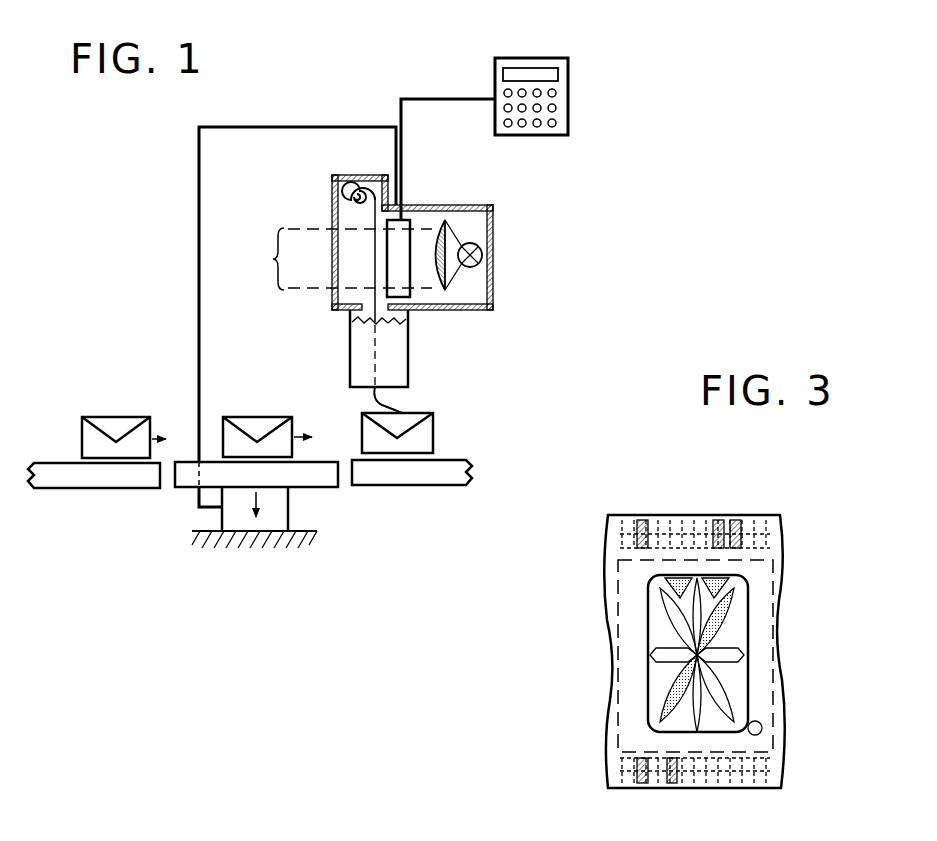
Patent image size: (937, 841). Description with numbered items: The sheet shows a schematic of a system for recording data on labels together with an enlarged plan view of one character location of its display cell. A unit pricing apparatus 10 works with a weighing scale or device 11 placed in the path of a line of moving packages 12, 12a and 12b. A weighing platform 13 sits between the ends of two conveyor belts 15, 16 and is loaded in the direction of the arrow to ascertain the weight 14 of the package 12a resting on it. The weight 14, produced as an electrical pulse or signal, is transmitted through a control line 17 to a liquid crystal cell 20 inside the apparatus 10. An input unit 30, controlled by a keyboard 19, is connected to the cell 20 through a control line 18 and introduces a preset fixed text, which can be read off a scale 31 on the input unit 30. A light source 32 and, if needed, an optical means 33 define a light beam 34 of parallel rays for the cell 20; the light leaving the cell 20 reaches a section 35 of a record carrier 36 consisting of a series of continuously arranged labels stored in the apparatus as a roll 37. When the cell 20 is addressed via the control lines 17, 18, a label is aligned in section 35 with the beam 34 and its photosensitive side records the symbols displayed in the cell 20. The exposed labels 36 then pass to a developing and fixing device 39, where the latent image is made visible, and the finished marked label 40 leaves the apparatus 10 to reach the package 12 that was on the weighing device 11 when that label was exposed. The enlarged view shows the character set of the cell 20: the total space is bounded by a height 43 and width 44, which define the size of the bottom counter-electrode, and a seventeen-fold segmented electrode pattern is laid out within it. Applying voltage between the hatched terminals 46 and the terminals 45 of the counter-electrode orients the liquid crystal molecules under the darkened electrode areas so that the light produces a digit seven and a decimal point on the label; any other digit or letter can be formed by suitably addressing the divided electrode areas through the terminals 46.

In FIG. 1, the unit pricing apparatus 10 is at (500, 197).
In FIG. 1, the weighing scale or device 11 is at (296, 499).
In FIG. 1, the package 12 is at (372, 412).
In FIG. 1, the package 12a is at (265, 417).
In FIG. 1, the package 12b is at (116, 420).
In FIG. 1, the weighing platform 13 is at (330, 476).
In FIG. 1, the weight 14 is at (230, 515).
In FIG. 1, the conveyor belt 15 is at (82, 478).
In FIG. 1, the conveyor belt 16 is at (414, 477).
In FIG. 1, the control line 17 is at (285, 127).
In FIG. 1, the control line 18 is at (433, 99).
In FIG. 1, the keyboard 19 is at (556, 108).
In FIG. 1, the liquid crystal cell 20 is at (414, 226).
In FIG. 3, the liquid crystal cell 20 is at (786, 504).
In FIG. 1, the input unit 30 is at (576, 64).
In FIG. 1, the scale 31 is at (535, 72).
In FIG. 1, the light source 32 is at (483, 257).
In FIG. 1, the optical means 33 is at (444, 285).
In FIG. 1, the light beam 34 is at (429, 228).
In FIG. 1, the section 35 is at (263, 259).
In FIG. 1, the record carrier 36 is at (332, 300).
In FIG. 1, the roll 37 is at (332, 192).
In FIG. 1, the developing and fixing device 39 is at (413, 348).
In FIG. 1, the finished marked label 40 is at (383, 399).
In FIG. 3, the height 43 is at (648, 733).
In FIG. 3, the width 44 is at (748, 557).
In FIG. 3, the terminals of the counter-electrode 45 is at (615, 770).
In FIG. 3, the terminals 46 is at (642, 518).